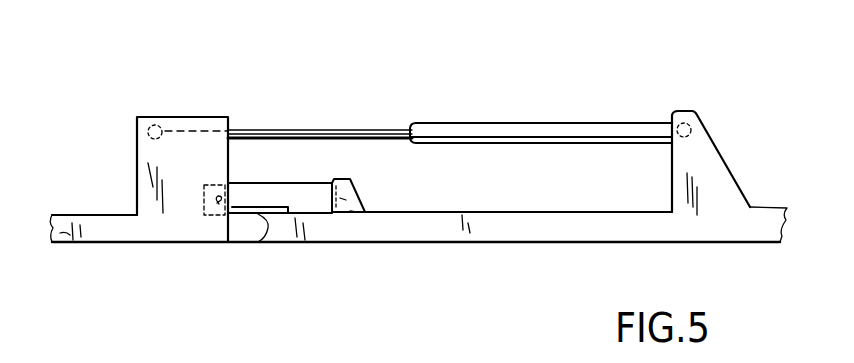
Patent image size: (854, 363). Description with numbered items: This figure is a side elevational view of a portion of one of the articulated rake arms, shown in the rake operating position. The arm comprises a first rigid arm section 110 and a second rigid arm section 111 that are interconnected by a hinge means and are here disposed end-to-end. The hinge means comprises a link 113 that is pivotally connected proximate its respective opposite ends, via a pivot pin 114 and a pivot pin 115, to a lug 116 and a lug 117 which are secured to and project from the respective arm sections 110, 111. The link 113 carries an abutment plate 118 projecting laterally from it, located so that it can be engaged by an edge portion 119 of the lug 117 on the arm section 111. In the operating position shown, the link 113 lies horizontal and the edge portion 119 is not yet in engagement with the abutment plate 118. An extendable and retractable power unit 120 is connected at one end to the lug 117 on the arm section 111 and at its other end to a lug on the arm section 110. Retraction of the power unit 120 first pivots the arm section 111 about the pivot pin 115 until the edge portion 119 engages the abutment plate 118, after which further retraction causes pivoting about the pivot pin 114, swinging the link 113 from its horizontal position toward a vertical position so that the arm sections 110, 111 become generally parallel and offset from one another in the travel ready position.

The first rigid arm section 110 is at (500, 243).
The second rigid arm section 111 is at (62, 233).
The link 113 is at (270, 195).
The pivot pin 114 is at (352, 210).
The pivot pin 115 is at (221, 213).
The lug 116 is at (334, 183).
The lug 117 is at (141, 173).
The abutment plate 118 is at (261, 241).
The edge portion 119 is at (229, 178).
The extendable and retractable power unit 120 is at (574, 133).